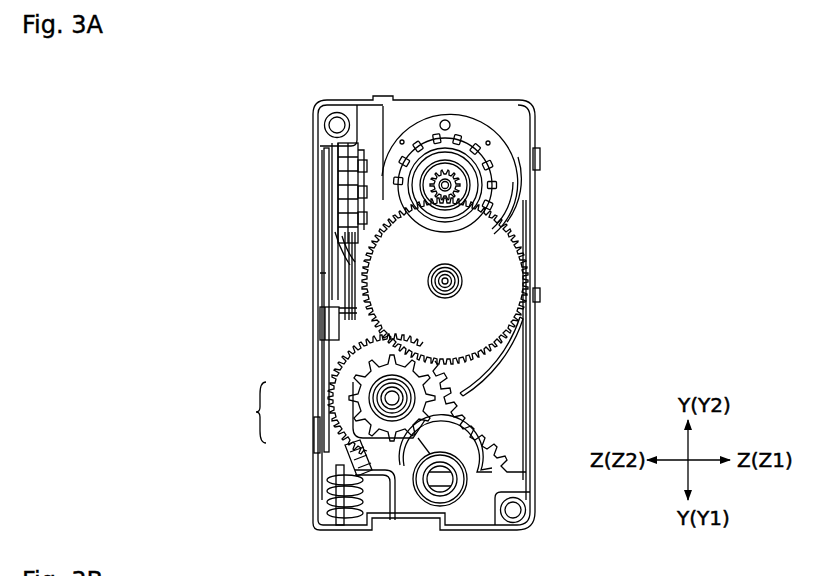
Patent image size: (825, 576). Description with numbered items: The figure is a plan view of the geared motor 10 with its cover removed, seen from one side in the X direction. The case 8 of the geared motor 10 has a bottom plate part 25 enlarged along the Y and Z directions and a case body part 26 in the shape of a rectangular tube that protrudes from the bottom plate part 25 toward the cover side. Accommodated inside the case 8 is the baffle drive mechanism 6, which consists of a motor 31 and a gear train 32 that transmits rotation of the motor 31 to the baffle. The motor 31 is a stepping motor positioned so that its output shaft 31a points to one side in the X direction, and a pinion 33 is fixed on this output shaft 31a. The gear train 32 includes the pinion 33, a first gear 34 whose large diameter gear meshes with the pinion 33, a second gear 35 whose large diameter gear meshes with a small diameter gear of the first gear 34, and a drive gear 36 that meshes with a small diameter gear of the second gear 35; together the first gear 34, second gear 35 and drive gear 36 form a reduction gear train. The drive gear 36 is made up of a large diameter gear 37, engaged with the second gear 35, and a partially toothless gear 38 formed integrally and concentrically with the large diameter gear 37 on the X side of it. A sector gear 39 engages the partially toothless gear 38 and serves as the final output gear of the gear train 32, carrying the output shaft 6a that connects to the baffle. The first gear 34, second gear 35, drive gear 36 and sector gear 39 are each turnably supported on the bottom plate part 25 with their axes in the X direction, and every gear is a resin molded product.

The baffle drive mechanism 6 is at (354, 241).
The output shaft 6a is at (437, 485).
The case 8 is at (541, 113).
The geared motor 10 is at (627, 131).
The bottom plate part 25 is at (518, 222).
The case body part 26 is at (538, 260).
The motor 31 is at (467, 127).
The output shaft 31a is at (397, 183).
The gear train 32 is at (355, 305).
The pinion 33 is at (443, 184).
The first gear 34 is at (500, 281).
The second gear 35 is at (497, 360).
The drive gear 36 is at (329, 429).
The large diameter gear 37 is at (324, 383).
The partially toothless gear 38 is at (364, 400).
The sector gear 39 is at (449, 506).